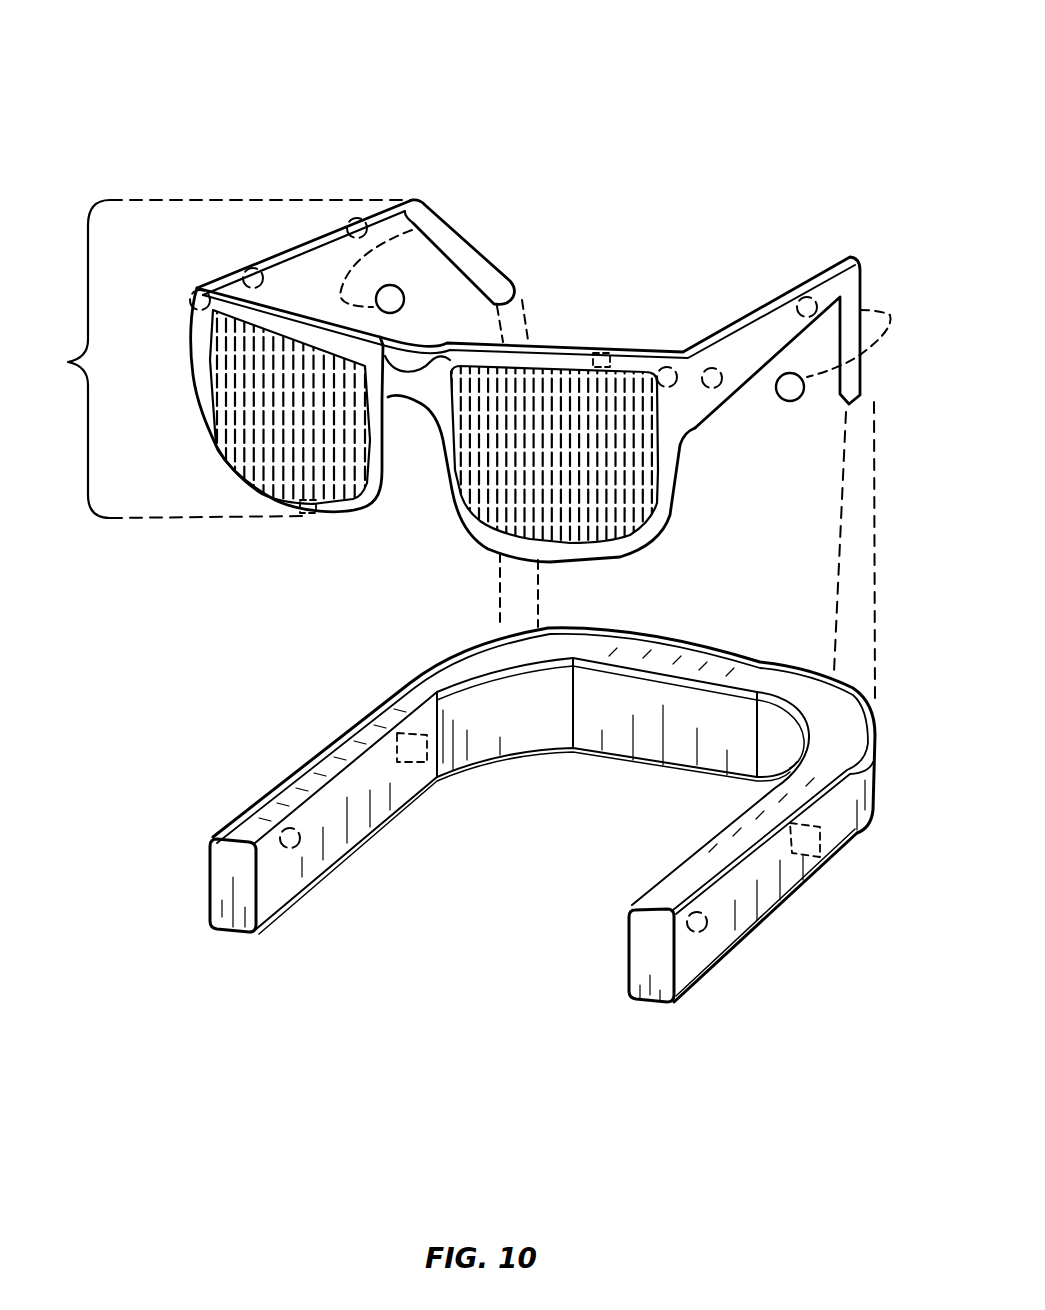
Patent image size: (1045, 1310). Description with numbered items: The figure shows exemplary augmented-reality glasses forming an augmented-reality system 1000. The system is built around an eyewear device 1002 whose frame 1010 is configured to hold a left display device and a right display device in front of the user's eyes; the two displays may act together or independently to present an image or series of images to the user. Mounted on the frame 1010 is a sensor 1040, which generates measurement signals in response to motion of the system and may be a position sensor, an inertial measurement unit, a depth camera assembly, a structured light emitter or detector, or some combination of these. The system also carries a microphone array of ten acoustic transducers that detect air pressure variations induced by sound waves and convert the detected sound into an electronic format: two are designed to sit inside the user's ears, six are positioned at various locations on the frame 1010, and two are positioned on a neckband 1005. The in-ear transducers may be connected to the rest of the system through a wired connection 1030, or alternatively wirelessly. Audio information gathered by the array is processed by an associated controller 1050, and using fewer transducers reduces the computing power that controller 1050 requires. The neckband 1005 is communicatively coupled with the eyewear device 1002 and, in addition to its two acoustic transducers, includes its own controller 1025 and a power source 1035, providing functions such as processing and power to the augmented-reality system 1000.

The augmented-reality system 1000 is at (110, 84).
The eyewear device 1002 is at (220, 359).
The neckband 1005 is at (210, 933).
The frame 1010 is at (416, 205).
The controller 1025 is at (807, 851).
The wired connection 1030 is at (858, 572).
The power source 1035 is at (415, 758).
The sensor 1040 is at (302, 509).
The controller 1050 is at (601, 352).